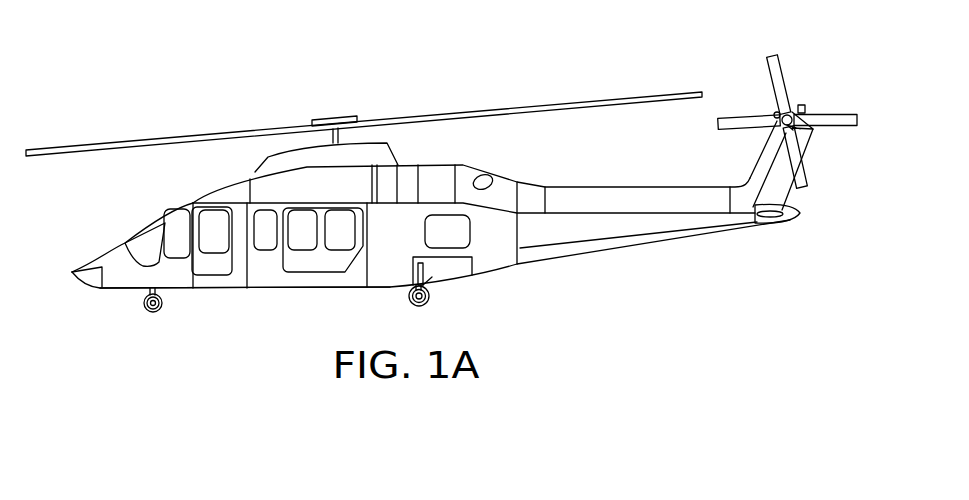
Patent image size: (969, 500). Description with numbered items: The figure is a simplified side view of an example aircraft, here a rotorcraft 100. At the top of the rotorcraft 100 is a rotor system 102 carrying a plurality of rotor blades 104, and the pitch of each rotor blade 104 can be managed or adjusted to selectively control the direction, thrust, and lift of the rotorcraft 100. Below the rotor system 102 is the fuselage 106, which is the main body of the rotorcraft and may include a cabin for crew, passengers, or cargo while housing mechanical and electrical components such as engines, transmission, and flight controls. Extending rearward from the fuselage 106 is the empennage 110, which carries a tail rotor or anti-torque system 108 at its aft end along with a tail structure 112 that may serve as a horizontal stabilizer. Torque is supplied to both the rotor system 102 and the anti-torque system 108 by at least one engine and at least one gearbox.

The rotorcraft 100 is at (223, 59).
The rotor system 102 is at (348, 102).
The rotor blade 104 is at (167, 136).
The fuselage 106 is at (265, 289).
The tail rotor or anti-torque system 108 is at (809, 91).
The empennage 110 is at (655, 243).
The tail structure 112 is at (772, 221).